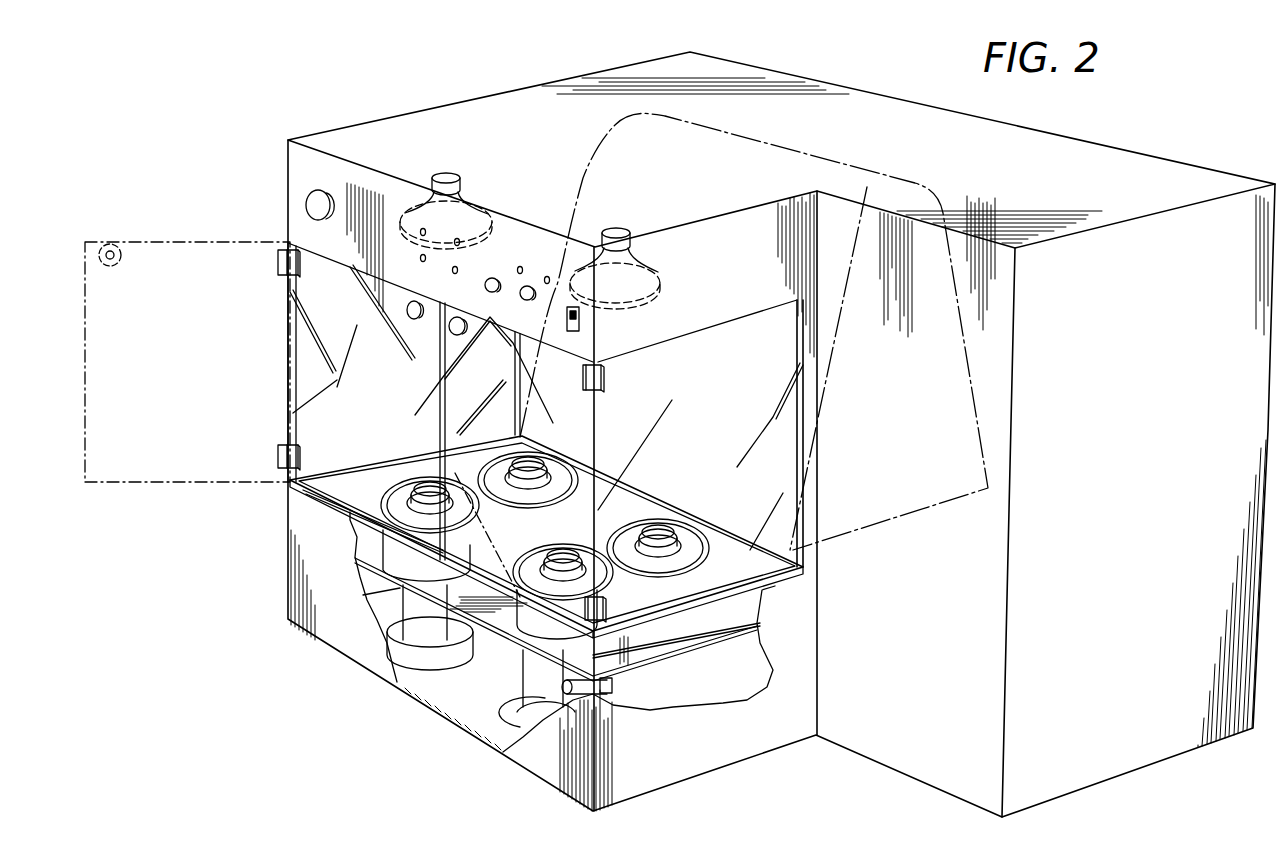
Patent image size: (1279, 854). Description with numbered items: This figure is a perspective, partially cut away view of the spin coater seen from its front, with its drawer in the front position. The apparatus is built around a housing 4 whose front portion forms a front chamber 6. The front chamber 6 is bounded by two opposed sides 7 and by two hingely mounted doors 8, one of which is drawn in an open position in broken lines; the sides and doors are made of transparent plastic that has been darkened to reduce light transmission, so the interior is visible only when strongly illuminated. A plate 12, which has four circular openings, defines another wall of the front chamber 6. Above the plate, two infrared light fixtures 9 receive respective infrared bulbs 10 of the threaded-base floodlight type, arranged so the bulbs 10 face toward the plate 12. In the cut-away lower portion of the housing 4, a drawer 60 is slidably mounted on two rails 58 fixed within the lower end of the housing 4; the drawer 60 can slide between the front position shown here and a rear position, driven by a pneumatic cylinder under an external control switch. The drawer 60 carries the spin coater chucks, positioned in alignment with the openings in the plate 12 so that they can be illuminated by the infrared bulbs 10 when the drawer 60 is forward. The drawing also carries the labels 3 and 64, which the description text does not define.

The glass door 3 is at (790, 372).
The housing 4 is at (850, 113).
The front chamber 6 is at (320, 327).
The opposed sides 7 is at (384, 392).
The hingely mounted doors 8 is at (205, 258).
The infrared light fixture 9 is at (448, 173).
The infrared bulb 10 is at (485, 227).
The plate 12 is at (645, 507).
The rails 58 is at (705, 653).
The drawer 60 is at (655, 657).
The pump seats 64 is at (482, 518).